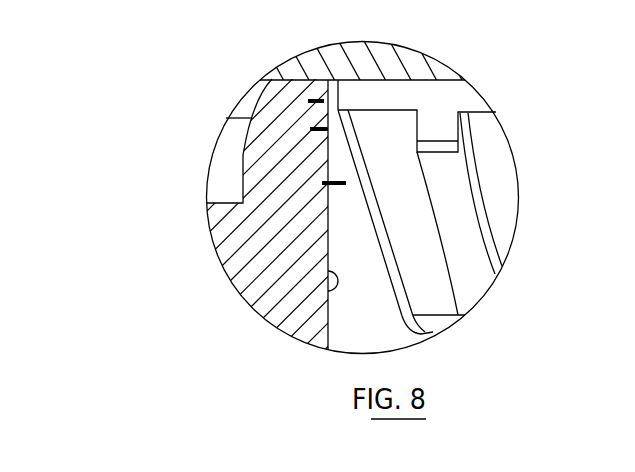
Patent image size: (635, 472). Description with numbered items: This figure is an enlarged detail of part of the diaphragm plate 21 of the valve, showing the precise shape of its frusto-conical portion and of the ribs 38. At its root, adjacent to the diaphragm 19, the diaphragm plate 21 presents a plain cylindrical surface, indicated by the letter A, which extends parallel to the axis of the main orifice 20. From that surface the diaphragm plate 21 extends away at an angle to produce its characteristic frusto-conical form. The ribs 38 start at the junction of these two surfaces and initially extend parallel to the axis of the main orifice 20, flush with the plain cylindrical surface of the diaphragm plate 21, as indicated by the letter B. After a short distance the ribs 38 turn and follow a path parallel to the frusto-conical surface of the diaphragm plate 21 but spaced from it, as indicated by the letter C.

The diaphragm 19 is at (417, 73).
The main orifice 20 is at (328, 280).
The diaphragm plate 21 is at (502, 186).
The ribs 38 is at (372, 223).
The plain cylindrical surface A is at (338, 100).
The initial rib portion flush with cylindrical surface B is at (338, 128).
The rib path parallel to frusto-conical surface C is at (346, 181).